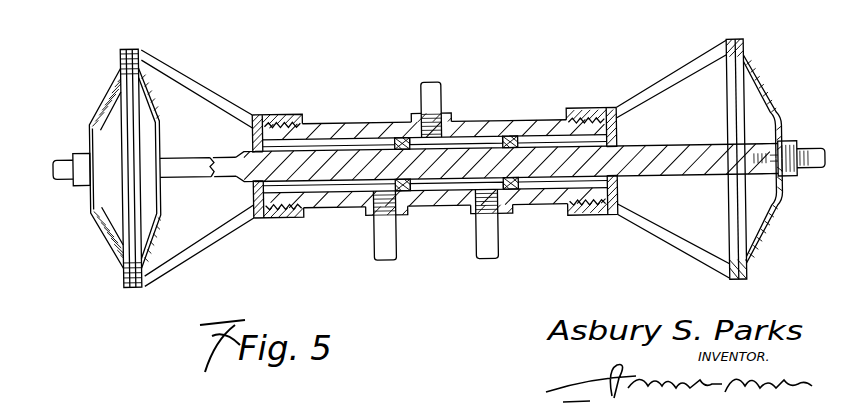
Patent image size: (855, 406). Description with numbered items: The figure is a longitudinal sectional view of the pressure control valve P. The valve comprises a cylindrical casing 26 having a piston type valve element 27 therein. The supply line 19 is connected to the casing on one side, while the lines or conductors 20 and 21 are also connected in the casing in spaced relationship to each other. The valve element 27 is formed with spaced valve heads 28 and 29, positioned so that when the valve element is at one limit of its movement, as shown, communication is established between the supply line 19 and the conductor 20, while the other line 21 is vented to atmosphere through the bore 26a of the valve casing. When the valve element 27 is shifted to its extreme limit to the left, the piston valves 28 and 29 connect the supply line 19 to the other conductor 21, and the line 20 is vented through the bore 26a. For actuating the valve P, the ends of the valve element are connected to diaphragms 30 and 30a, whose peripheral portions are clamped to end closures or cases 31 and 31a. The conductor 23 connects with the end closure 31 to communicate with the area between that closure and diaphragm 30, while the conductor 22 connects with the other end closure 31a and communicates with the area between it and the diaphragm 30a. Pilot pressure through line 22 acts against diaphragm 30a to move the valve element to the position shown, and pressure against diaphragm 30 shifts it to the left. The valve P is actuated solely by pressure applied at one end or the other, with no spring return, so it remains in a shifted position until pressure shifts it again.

The valve P is at (302, 100).
The supply line 19 is at (428, 83).
The line 20 is at (482, 288).
The line 21 is at (397, 239).
The conductor 22 is at (60, 157).
The conductor 23 is at (813, 148).
The cylindrical casing 26 is at (325, 124).
The bore 26a is at (253, 194).
The valve element 27 is at (460, 145).
The valve head 28 is at (393, 137).
The valve head 29 is at (512, 136).
The diaphragm 30 is at (762, 86).
The end closure 31 is at (772, 223).
The diaphragm 30a is at (143, 121).
The end closure 31a is at (100, 228).